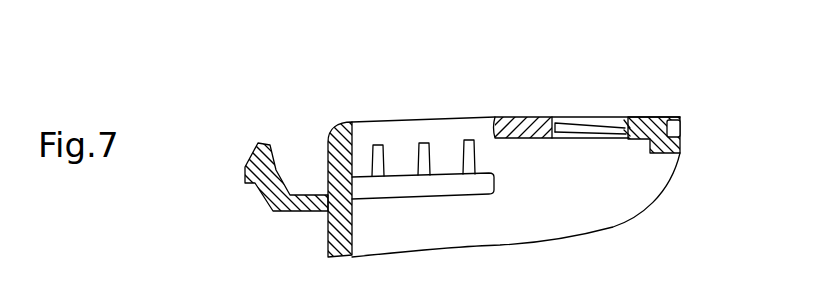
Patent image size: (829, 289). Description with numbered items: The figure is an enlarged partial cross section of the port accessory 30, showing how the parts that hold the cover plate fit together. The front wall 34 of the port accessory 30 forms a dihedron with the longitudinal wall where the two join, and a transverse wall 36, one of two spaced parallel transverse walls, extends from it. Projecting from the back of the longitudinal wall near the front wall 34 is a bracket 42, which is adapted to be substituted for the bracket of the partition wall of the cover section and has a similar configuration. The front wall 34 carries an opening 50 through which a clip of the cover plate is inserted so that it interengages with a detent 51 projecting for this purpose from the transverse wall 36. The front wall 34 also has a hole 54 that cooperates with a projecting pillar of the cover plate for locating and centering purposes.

The port accessory 30 is at (293, 92).
The front wall 34 is at (657, 111).
The transverse wall 36 is at (594, 207).
The bracket 42 is at (273, 211).
The opening 50 is at (490, 118).
The detent 51 is at (477, 196).
The hole 54 is at (617, 124).